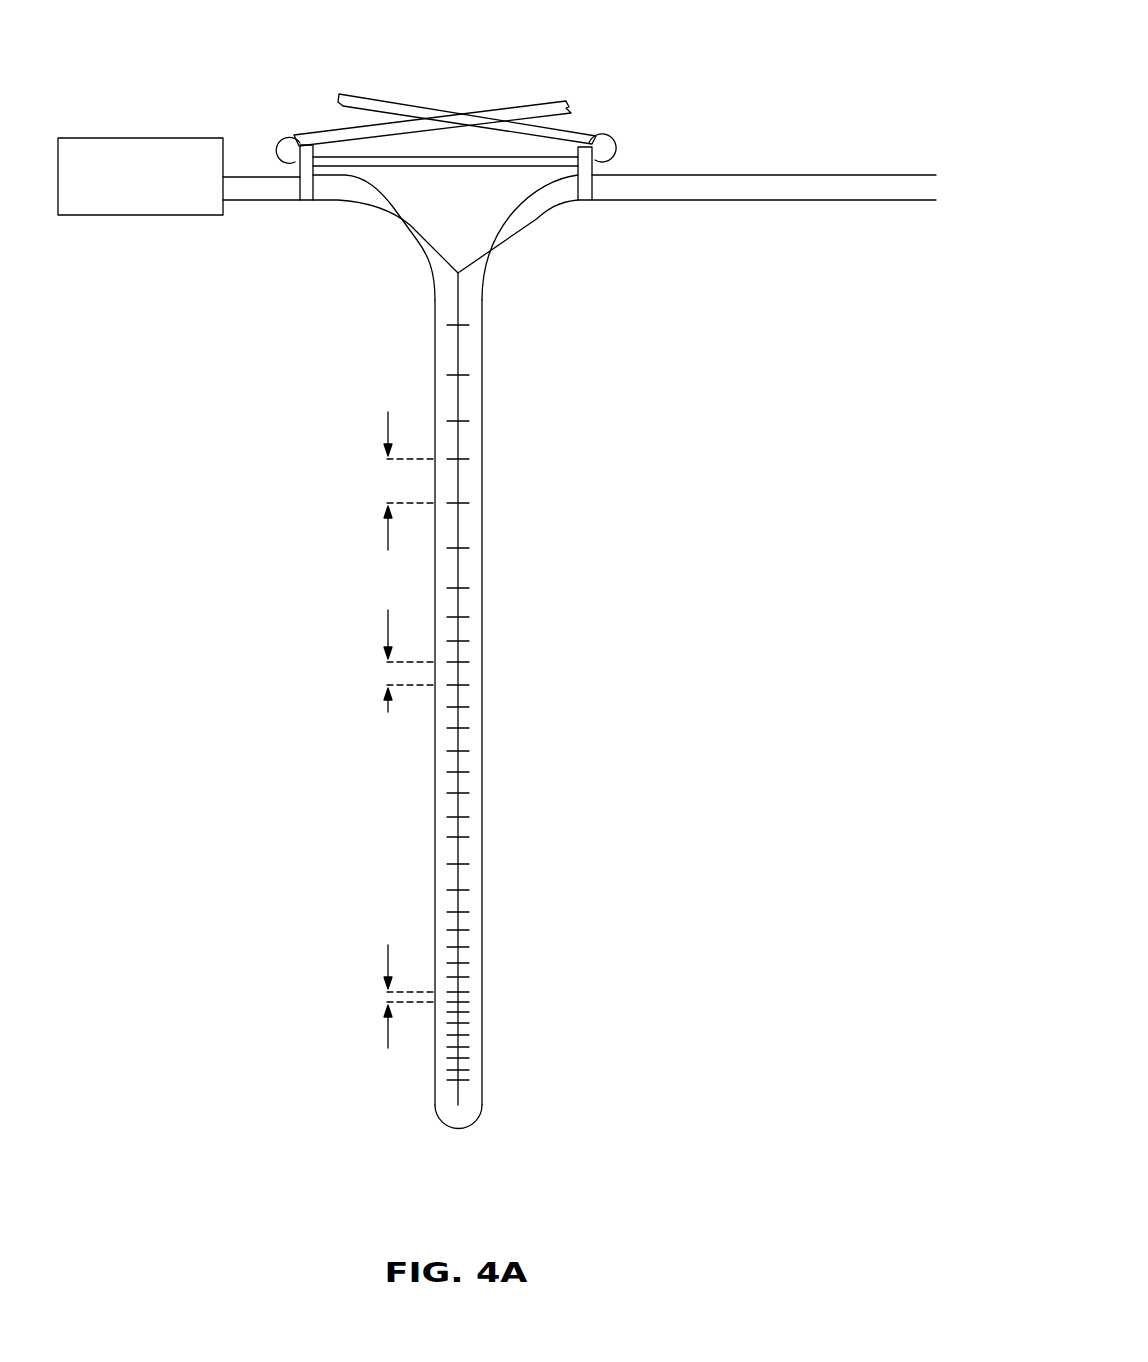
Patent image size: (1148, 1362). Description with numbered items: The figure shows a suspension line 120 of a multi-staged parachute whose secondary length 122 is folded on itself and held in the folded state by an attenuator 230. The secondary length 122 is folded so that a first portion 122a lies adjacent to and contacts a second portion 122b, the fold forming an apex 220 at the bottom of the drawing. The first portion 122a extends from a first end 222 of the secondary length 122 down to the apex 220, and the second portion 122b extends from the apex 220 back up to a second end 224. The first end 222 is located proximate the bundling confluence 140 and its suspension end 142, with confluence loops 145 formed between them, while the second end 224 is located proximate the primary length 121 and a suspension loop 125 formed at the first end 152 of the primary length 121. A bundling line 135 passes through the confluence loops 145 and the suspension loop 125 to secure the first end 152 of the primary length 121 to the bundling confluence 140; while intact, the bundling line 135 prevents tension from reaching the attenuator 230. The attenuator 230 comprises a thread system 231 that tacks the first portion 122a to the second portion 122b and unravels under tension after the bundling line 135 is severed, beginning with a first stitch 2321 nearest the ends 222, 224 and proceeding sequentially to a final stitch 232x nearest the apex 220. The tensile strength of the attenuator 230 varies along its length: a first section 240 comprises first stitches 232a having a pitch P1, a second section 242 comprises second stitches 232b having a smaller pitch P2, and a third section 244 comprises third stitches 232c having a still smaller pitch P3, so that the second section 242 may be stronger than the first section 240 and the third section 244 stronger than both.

The suspension line 120 is at (555, 90).
The primary length 121 is at (742, 187).
The secondary length 122 is at (583, 260).
The first portion 122a is at (442, 297).
The second portion 122b is at (481, 272).
The suspension loop 125 is at (604, 135).
The bundling line 135 is at (430, 162).
The bundling confluence 140 is at (218, 108).
The suspension end 142 is at (286, 190).
The confluence loop 145 is at (296, 145).
The first end 152 is at (613, 187).
The apex 220 is at (460, 1132).
The first end 222 is at (331, 193).
The second end 224 is at (558, 192).
The attenuator 230 is at (210, 455).
The thread system 231 is at (403, 377).
The first stitch 2321 is at (436, 326).
The first stitches 232a is at (463, 459).
The second stitches 232b is at (470, 660).
The third stitches 232c is at (460, 930).
The final stitch 232x is at (463, 1081).
The first section 240 is at (283, 315).
The second section 242 is at (283, 633).
The third section 244 is at (283, 860).
The pitch of first stitches P1 is at (406, 468).
The pitch of second stitches P2 is at (406, 685).
The pitch of third stitches P3 is at (406, 980).